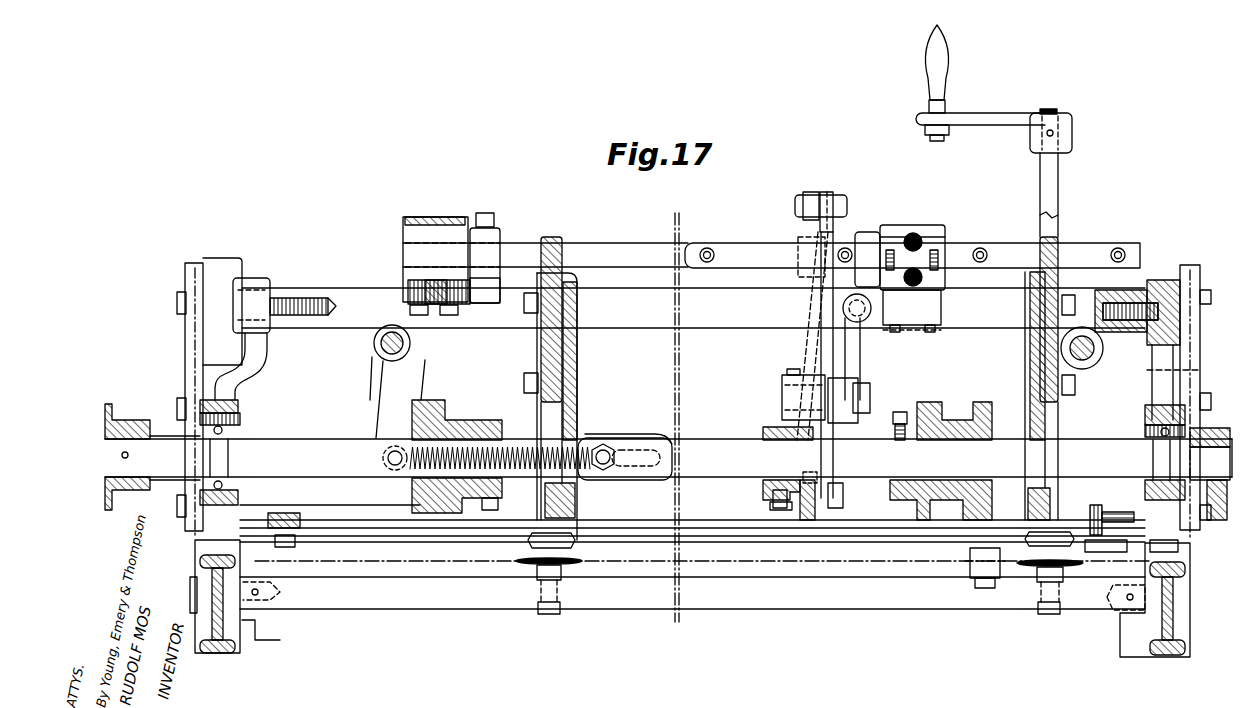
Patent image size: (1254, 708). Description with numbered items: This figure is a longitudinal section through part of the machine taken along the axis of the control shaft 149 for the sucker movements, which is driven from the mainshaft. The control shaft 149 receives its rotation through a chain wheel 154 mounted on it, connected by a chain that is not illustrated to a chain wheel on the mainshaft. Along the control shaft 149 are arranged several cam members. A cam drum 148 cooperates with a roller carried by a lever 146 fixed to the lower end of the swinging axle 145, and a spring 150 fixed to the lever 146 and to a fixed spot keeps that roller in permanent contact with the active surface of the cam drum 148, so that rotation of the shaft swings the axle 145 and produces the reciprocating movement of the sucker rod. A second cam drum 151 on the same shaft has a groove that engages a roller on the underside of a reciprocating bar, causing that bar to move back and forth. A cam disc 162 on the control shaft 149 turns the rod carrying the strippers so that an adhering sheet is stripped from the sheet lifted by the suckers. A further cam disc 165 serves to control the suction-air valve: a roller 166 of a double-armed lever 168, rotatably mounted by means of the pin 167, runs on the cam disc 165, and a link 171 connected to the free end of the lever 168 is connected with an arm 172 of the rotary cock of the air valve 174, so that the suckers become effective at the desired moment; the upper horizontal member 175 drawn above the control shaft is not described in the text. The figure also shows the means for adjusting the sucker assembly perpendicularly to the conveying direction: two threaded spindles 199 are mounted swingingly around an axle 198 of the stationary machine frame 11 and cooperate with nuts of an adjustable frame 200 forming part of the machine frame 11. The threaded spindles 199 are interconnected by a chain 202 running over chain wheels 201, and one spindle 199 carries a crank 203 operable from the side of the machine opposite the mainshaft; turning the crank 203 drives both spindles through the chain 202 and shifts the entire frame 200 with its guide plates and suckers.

The machine frame 11 is at (236, 264).
The swinging axle 145 is at (384, 344).
The lever 146 is at (385, 373).
The cam drum 148 is at (414, 508).
The control shaft 149 is at (312, 440).
The spring 150 is at (514, 446).
The cam drum 151 is at (925, 404).
The chain wheel 154 is at (114, 420).
The cam disc 162 is at (1220, 522).
The cam disc 165 is at (790, 510).
The roller 166 is at (806, 472).
The pin 167 is at (784, 390).
The double-armed lever 168 is at (810, 348).
The link 171 is at (812, 194).
The arm 172 is at (836, 232).
The air valve 174 is at (933, 238).
The bar 175 is at (731, 248).
The axle 198 is at (631, 606).
The threaded spindle 199 is at (529, 272).
The adjustable frame 200 is at (190, 333).
The chain wheel 201 is at (582, 561).
The chain 202 is at (890, 562).
The crank 203 is at (987, 115).